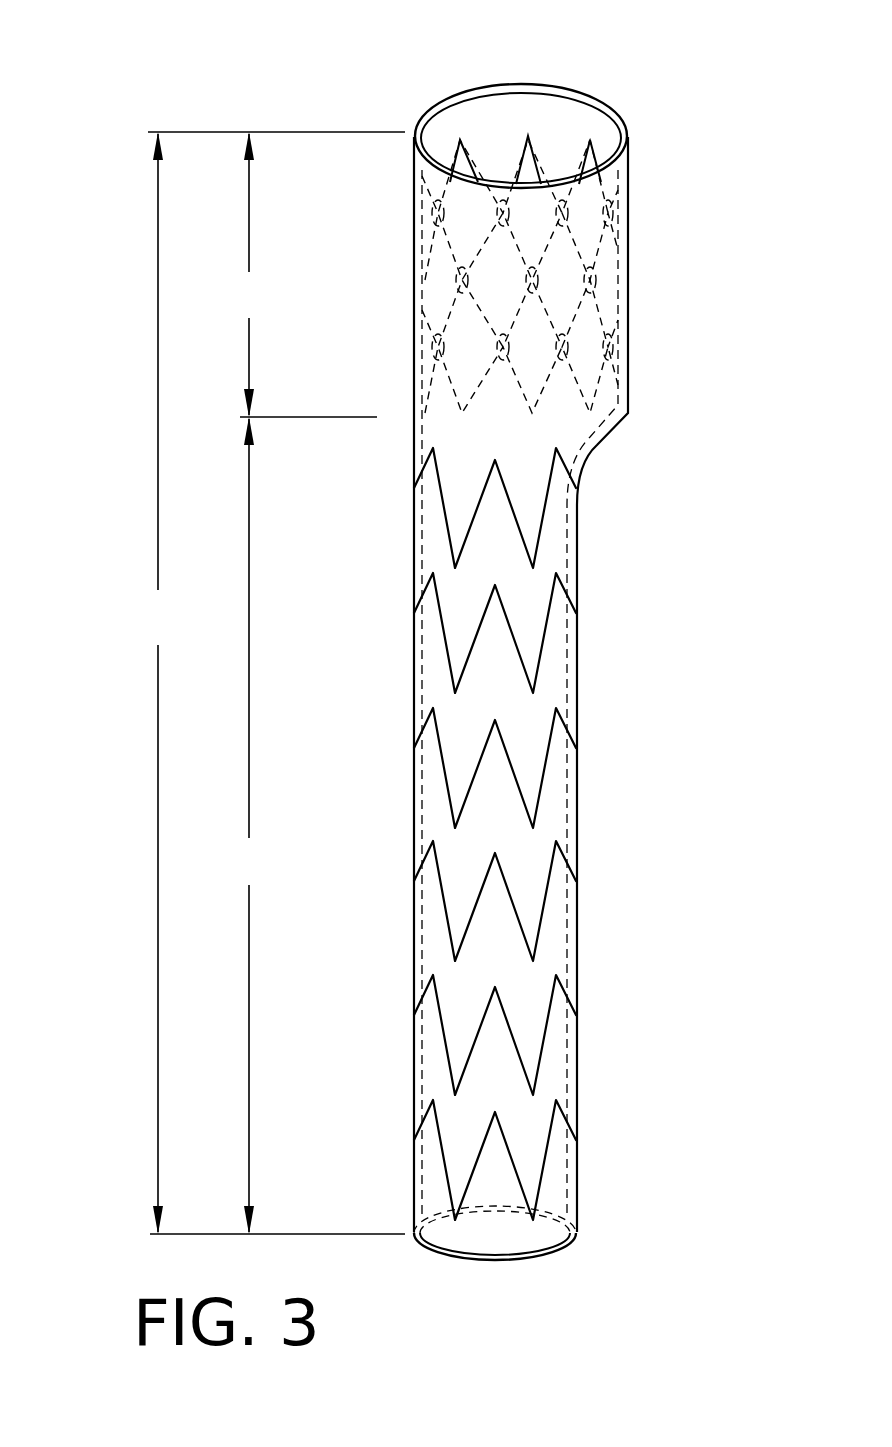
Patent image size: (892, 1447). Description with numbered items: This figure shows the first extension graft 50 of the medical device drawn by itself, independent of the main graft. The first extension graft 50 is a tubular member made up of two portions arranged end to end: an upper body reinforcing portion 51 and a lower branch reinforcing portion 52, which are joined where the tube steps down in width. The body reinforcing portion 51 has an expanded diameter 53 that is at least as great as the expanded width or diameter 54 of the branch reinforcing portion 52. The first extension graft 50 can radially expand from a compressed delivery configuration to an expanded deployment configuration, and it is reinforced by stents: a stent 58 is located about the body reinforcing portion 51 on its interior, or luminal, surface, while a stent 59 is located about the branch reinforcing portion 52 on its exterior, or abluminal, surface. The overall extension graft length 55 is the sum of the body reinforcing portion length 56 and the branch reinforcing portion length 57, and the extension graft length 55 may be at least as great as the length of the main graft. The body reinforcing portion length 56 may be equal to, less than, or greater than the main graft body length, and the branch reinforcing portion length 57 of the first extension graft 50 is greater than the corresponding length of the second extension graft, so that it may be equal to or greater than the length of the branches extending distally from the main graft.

The first extension graft 50 is at (388, 535).
The body reinforcing portion 51 is at (638, 137).
The branch reinforcing portion 52 is at (585, 1240).
The expanded diameter of body reinforcing portion 53 is at (628, 117).
The expanded diameter of branch reinforcing portion 54 is at (575, 1280).
The extension graft length 55 is at (158, 683).
The body reinforcing portion length 56 is at (249, 274).
The branch reinforcing portion length 57 is at (249, 825).
The stent 58 is at (480, 247).
The stent 59 is at (440, 790).